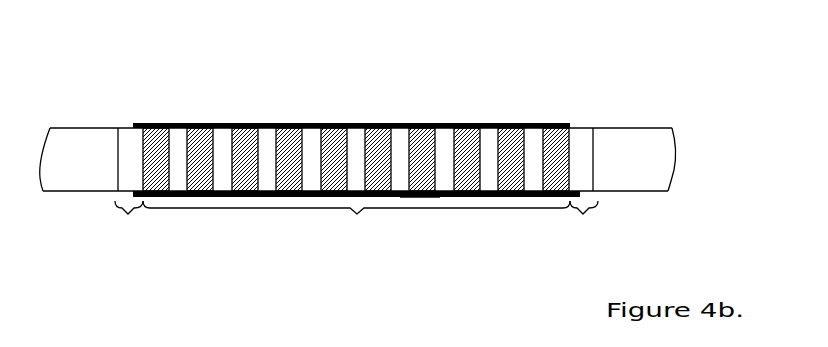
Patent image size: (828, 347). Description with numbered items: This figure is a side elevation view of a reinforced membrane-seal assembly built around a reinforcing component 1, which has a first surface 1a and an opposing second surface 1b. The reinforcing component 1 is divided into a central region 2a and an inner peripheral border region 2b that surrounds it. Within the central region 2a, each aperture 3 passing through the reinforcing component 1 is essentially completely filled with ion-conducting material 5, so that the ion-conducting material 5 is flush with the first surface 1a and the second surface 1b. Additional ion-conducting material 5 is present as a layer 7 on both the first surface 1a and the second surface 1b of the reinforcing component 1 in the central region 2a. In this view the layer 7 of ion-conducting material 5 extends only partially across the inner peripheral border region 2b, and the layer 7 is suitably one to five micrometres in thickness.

The reinforcing component 1 is at (645, 138).
The first surface 1a is at (600, 96).
The second surface 1b is at (608, 222).
The central region 2a is at (356, 224).
The inner peripheral border region 2b is at (351, 225).
The aperture 3 is at (385, 105).
The ion-conducting material 5 is at (260, 203).
The layer 7 is at (452, 217).